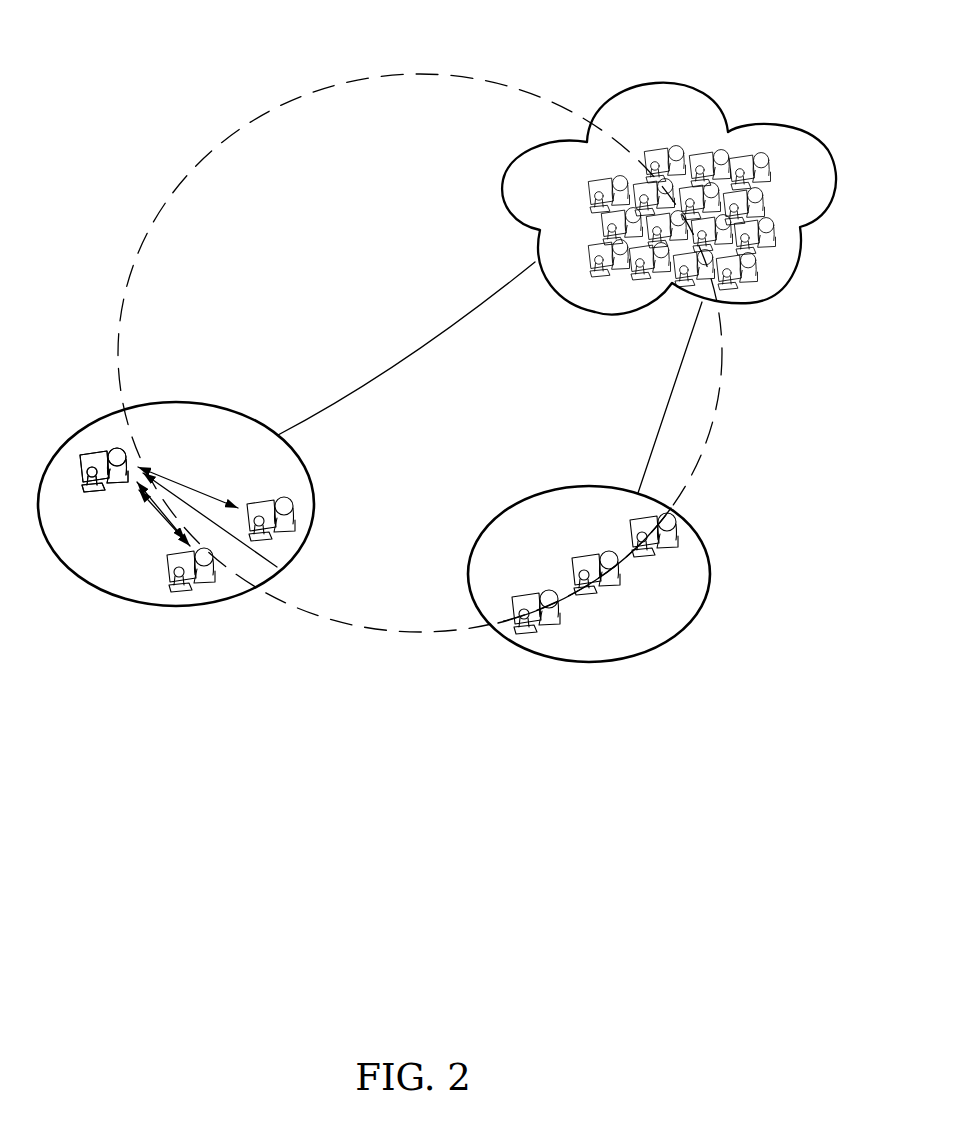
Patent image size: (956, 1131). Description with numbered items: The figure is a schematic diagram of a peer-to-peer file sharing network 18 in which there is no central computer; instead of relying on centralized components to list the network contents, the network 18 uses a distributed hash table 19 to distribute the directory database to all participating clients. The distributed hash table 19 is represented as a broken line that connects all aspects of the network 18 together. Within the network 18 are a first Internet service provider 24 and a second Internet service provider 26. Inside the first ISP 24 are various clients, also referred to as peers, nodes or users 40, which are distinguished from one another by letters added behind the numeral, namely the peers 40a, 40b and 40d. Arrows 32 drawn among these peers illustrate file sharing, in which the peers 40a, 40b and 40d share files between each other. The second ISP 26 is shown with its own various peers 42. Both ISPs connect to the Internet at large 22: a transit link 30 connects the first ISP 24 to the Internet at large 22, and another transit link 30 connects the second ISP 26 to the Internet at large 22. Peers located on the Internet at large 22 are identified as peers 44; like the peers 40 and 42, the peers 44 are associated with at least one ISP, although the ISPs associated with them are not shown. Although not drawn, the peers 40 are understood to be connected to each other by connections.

The peer-to-peer file sharing network 18 is at (163, 182).
The distributed hash table 19 is at (290, 97).
The Internet at large 22 is at (582, 59).
The first Internet service provider 24 is at (184, 404).
The second Internet service provider 26 is at (711, 571).
The transit link 30 is at (402, 360).
The arrows 32 is at (160, 510).
The peers 40 is at (165, 442).
The peer 40a is at (280, 532).
The peer 40b is at (198, 587).
The peer 40d is at (95, 470).
The peers 42 is at (612, 598).
The peers on the Internet at large 44 is at (752, 136).